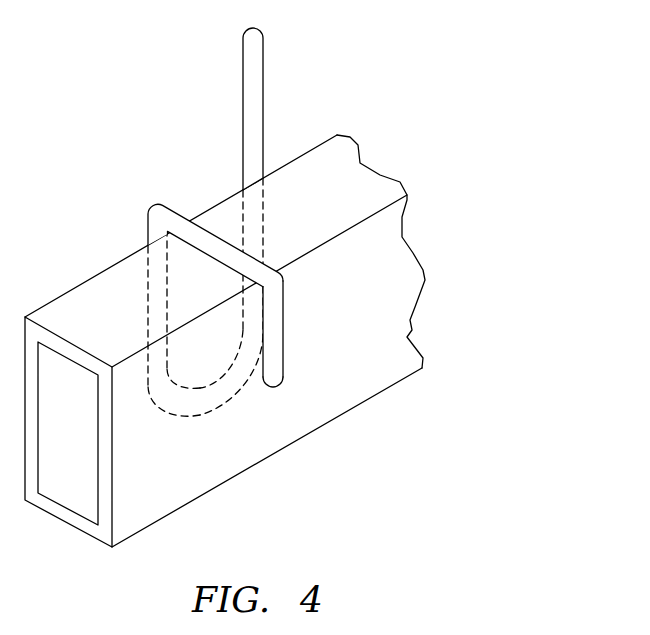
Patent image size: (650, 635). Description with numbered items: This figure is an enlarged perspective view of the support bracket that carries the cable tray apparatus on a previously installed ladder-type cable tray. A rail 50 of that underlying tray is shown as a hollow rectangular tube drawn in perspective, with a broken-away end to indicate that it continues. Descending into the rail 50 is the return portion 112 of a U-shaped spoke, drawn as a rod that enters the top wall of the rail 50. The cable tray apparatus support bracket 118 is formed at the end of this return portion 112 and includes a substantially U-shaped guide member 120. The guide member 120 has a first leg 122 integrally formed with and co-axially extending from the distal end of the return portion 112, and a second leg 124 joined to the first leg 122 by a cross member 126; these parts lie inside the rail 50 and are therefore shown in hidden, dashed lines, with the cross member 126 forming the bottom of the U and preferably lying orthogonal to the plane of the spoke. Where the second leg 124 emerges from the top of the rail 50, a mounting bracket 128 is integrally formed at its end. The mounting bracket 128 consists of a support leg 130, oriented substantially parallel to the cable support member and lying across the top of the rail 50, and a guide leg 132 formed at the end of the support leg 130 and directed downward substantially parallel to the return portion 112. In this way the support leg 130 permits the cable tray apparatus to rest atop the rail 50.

The rail 50 is at (410, 280).
The return portion 112 is at (258, 62).
The cable tray apparatus support bracket 118 is at (215, 272).
The U-shaped guide member 120 is at (245, 378).
The first leg 122 is at (263, 228).
The second leg 124 is at (157, 275).
The cross member 126 is at (175, 413).
The mounting bracket 128 is at (285, 343).
The support leg 130 is at (212, 232).
The guide leg 132 is at (276, 372).